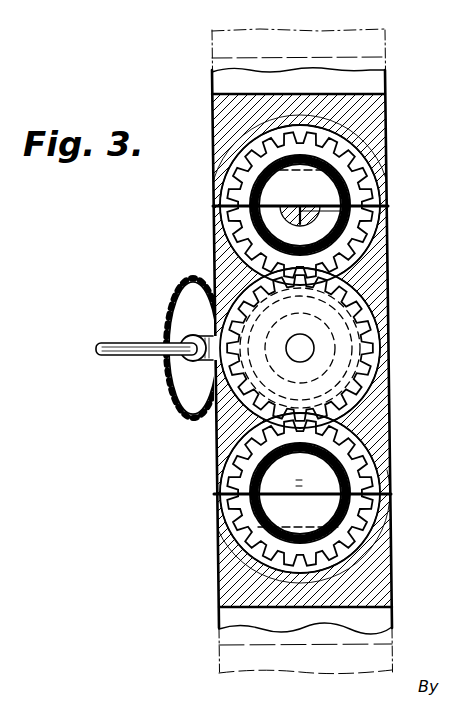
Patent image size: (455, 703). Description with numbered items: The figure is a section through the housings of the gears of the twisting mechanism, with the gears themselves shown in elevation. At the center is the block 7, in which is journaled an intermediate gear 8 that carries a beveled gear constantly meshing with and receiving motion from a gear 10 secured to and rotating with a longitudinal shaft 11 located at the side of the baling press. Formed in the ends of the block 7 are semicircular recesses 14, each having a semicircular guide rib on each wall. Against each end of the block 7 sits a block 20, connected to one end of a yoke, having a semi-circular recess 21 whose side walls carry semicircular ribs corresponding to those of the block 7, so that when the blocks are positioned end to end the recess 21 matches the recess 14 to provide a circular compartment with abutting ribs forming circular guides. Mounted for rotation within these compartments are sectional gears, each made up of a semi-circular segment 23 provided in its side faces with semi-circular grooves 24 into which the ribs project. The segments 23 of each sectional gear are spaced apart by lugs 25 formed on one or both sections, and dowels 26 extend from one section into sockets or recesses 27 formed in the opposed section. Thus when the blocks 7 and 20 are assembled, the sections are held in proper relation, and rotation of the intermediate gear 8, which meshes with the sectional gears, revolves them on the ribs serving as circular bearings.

The block 7 is at (388, 263).
The intermediate gear 8 is at (388, 334).
The gear 10 is at (182, 395).
The longitudinal shaft 11 is at (128, 354).
The semicircular recesses 14 is at (223, 228).
The block 20 is at (388, 127).
The semi-circular recess 21 is at (388, 149).
The semi-circular segment 23 is at (388, 187).
The semi-circular grooves 24 is at (262, 190).
The lugs 25 is at (294, 510).
The dowels 26 is at (324, 497).
The sockets or recesses 27 is at (388, 221).